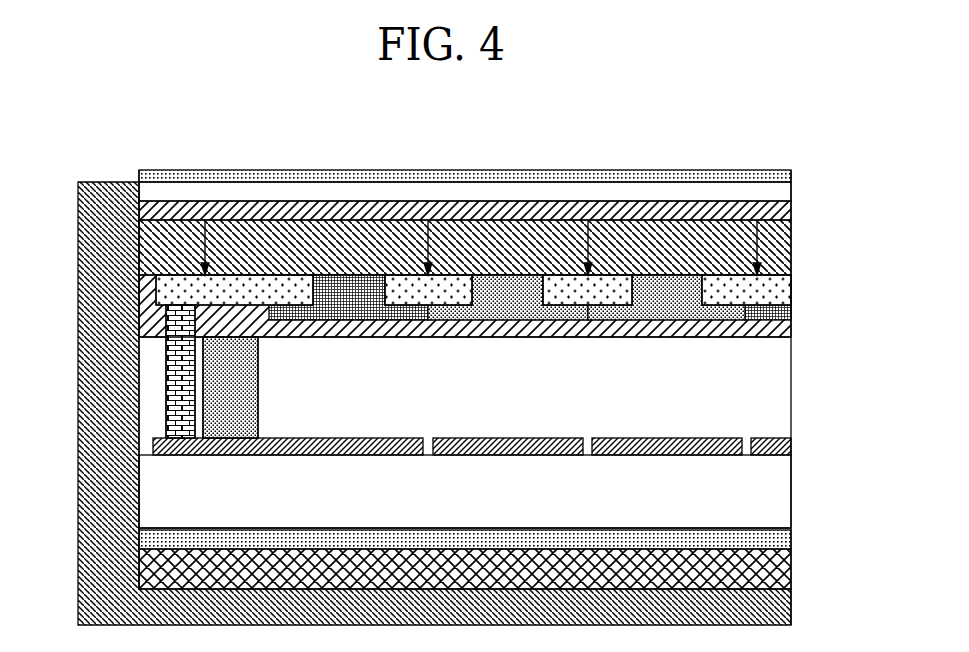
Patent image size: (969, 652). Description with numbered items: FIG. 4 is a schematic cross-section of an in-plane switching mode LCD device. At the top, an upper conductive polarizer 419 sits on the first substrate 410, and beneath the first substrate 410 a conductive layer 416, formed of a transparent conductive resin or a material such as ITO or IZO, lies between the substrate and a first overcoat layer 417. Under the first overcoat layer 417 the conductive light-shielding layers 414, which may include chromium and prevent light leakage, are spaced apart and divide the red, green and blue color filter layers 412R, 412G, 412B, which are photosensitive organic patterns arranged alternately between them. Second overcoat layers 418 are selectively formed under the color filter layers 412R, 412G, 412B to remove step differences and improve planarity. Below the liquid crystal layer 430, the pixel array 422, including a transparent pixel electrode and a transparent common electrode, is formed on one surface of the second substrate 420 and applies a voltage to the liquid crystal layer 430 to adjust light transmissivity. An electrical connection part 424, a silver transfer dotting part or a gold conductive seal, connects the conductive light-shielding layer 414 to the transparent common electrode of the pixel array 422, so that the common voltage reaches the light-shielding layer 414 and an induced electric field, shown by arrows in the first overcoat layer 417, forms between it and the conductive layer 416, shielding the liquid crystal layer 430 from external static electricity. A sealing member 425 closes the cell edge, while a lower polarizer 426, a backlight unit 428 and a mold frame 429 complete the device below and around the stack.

The upper conductive polarizer 419 is at (780, 176).
The first substrate 410 is at (780, 192).
The conductive layer 416 is at (780, 210).
The first overcoat layer 417 is at (780, 248).
The conductive light-shielding layer 414 is at (780, 290).
The second overcoat layer 418 is at (780, 330).
The red color filter layer 412R is at (344, 285).
The green color filter layer 412G is at (508, 285).
The blue color filter layer 412B is at (665, 285).
The electrical connection part 424 is at (176, 322).
The sealing member 425 is at (258, 392).
The liquid crystal layer 430 is at (465, 387).
The pixel array 422 is at (780, 447).
The second substrate 420 is at (780, 490).
The lower polarizer 426 is at (780, 540).
The backlight unit 428 is at (780, 565).
The mold frame 429 is at (780, 605).